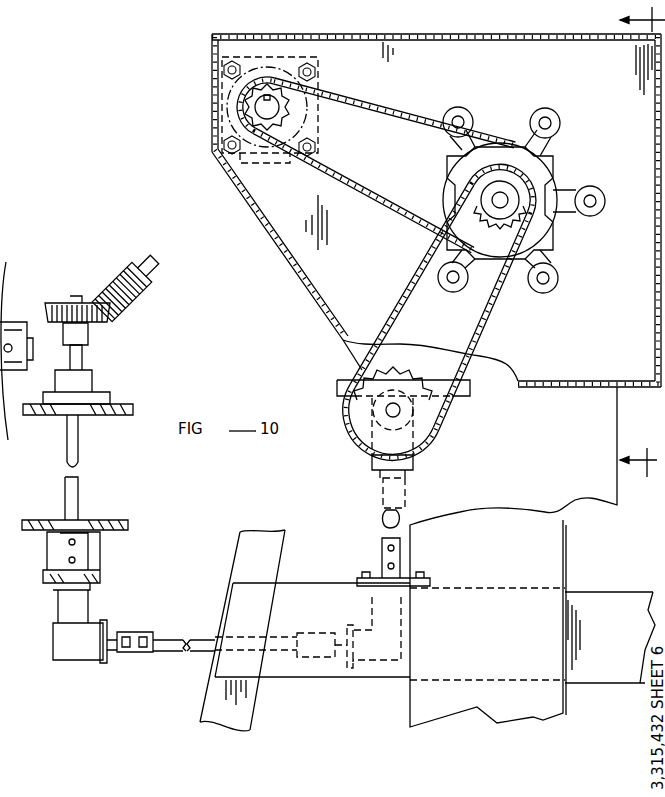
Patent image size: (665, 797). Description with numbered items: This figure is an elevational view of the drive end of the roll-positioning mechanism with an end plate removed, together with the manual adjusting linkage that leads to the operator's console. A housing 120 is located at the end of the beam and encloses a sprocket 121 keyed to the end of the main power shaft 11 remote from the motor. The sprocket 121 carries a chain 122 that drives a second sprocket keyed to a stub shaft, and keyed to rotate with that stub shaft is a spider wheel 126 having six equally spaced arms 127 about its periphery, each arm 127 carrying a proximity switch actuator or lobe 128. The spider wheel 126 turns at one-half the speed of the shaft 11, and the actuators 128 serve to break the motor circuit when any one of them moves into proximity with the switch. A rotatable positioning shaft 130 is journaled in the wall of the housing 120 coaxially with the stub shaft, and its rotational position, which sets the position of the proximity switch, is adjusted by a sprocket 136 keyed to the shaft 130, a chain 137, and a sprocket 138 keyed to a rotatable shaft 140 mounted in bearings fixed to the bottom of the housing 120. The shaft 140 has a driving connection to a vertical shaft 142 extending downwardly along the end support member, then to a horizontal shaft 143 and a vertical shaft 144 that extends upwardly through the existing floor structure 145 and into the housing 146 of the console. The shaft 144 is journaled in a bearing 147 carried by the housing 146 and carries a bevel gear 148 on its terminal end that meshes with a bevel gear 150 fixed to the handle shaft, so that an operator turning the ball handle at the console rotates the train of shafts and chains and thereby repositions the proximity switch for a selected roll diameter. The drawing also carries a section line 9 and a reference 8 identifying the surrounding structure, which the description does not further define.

The machine frame body 8 is at (598, 500).
The section line 9- 9 is at (642, 245).
The shaft 11 is at (232, 117).
The housing 120 is at (661, 130).
The sprocket 121 is at (255, 103).
The chain 122 is at (372, 110).
The spider wheel 126 is at (550, 218).
The arms 127 is at (530, 140).
The proximity switch actuator 128 is at (547, 287).
The positioning shaft 130 is at (500, 193).
The sprocket 136 is at (517, 193).
The chain 137 is at (400, 303).
The sprocket 138 is at (423, 427).
The rotatable shaft 140 is at (405, 410).
The vertical shaft 142 is at (382, 537).
The horizontal shaft 143 is at (172, 640).
The vertical shaft 144 is at (82, 447).
The floor structure 145 is at (90, 524).
The housing 146 is at (122, 410).
The bearing 147 is at (88, 382).
The bevel gear 148 is at (90, 334).
The bevel gear 150 is at (140, 273).